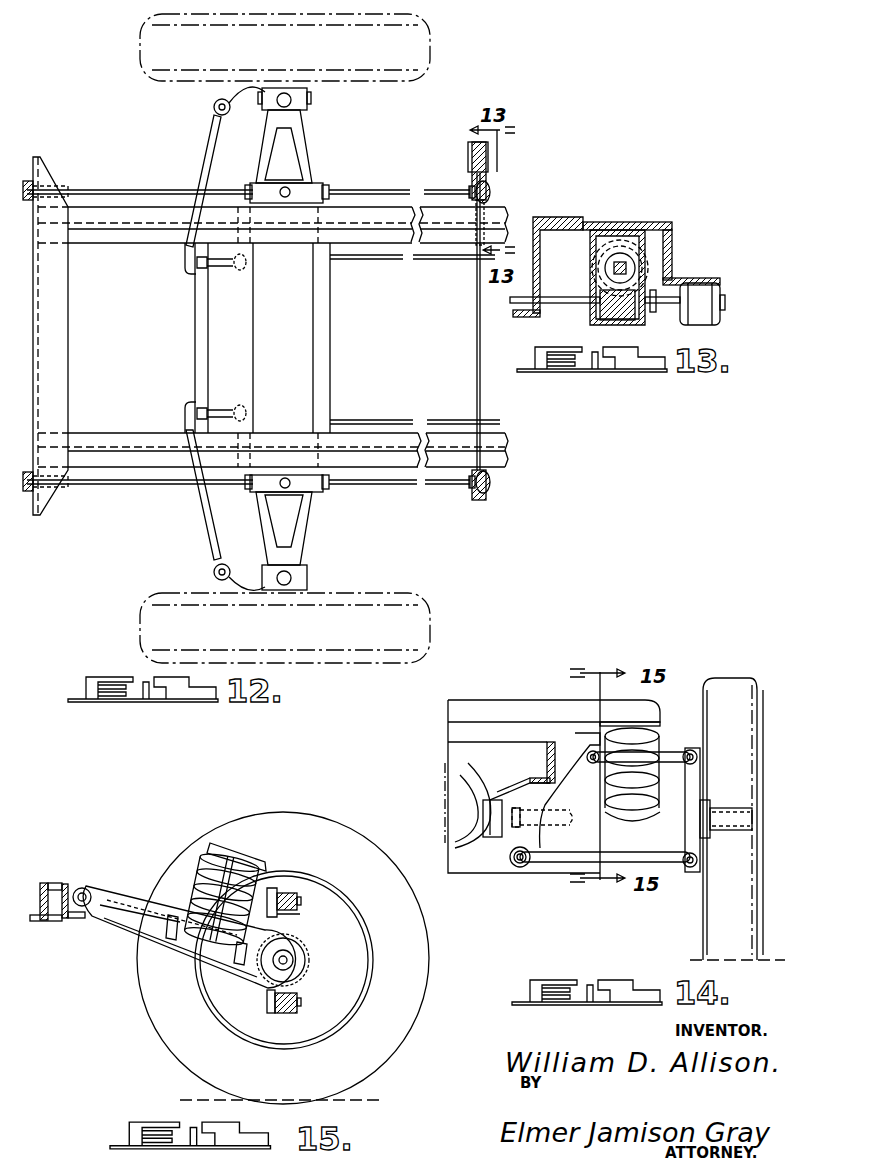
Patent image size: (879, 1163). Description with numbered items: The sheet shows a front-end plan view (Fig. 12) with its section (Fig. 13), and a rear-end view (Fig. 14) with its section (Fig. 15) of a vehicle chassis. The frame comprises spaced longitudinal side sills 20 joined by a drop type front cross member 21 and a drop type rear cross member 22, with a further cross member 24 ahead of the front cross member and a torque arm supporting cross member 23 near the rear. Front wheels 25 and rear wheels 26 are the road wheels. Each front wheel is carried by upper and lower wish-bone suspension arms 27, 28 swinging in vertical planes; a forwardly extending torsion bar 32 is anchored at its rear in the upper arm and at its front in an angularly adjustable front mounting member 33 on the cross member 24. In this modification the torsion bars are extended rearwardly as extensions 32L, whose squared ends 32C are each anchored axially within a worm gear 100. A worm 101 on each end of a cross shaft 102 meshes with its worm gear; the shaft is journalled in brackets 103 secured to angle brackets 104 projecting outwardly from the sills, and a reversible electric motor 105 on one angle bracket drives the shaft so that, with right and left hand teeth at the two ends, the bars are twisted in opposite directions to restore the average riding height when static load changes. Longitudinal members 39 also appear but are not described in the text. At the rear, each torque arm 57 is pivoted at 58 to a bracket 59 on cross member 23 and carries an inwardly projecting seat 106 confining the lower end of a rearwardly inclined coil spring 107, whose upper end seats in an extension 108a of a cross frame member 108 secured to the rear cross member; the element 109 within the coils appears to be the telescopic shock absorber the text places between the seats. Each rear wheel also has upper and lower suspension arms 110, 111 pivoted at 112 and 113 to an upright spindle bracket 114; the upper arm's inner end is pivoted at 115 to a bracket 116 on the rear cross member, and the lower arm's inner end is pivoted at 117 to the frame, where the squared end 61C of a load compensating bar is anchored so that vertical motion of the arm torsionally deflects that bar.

In FIG. 12, the frame sill 20 is at (143, 228).
In FIG. 13, the frame sill 20 is at (537, 290).
In FIG. 14, the frame sill 20 is at (546, 762).
In FIG. 12, the front cross member 21 is at (332, 346).
In FIG. 14, the rear cross member 22 is at (503, 792).
In FIG. 15, the torque arm supporting cross member 23 is at (44, 883).
In FIG. 12, the cross member 24 is at (66, 310).
In FIG. 12, the front wheel 25 is at (432, 52).
In FIG. 15, the rear wheel 26 is at (345, 830).
In FIG. 12, the upper suspension arm 27 is at (265, 150).
In FIG. 12, the lower suspension arm 28 is at (268, 168).
In FIG. 12, the torsion bar 32 is at (100, 190).
In FIG. 12, the torsion bar extension 32L is at (350, 190).
In FIG. 12, the squared end 32C is at (492, 192).
In FIG. 13, the squared end 32C is at (628, 268).
In FIG. 12, the front mounting member 33 is at (28, 181).
In FIG. 12, the rail 39 is at (420, 262).
In FIG. 14, the torque arm 57 is at (700, 778).
In FIG. 15, the torque arm 57 is at (118, 892).
In FIG. 15, the pivotal connection 58 is at (92, 915).
In FIG. 15, the bracket 59 is at (72, 884).
In FIG. 14, the squared end of load compensating bar 61C is at (537, 848).
In FIG. 13, the worm gear 100 is at (640, 255).
In FIG. 13, the worm 101 is at (625, 318).
In FIG. 12, the cross shaft 102 is at (477, 366).
In FIG. 13, the cross shaft 102 is at (560, 304).
In FIG. 13, the bracket 103 is at (592, 262).
In FIG. 12, the angle bracket 104 is at (471, 158).
In FIG. 13, the angle bracket 104 is at (592, 222).
In FIG. 12, the reversible electric motor 105 is at (490, 157).
In FIG. 14, the spring seat 106 is at (632, 818).
In FIG. 15, the spring seat 106 is at (195, 958).
In FIG. 14, the coil spring 107 is at (662, 740).
In FIG. 15, the coil spring 107 is at (195, 893).
In FIG. 13, the cross frame member 108 is at (722, 300).
In FIG. 14, the cross frame member 108 is at (472, 700).
In FIG. 14, the extension 108a is at (648, 702).
In FIG. 15, the extension 108a is at (240, 845).
In FIG. 15, the spring rod 109 is at (266, 902).
In FIG. 14, the upper suspension arm 110 is at (660, 748).
In FIG. 15, the upper suspension arm 110 is at (300, 893).
In FIG. 14, the lower suspension arm 111 is at (560, 862).
In FIG. 15, the lower suspension arm 111 is at (286, 1013).
In FIG. 14, the pivot 112 is at (698, 756).
In FIG. 14, the pivot 113 is at (698, 862).
In FIG. 14, the spindle bracket 114 is at (706, 806).
In FIG. 15, the spindle bracket 114 is at (282, 920).
In FIG. 14, the pivot 115 is at (630, 713).
In FIG. 14, the bracket 116 is at (570, 800).
In FIG. 14, the pivot 117 is at (520, 867).